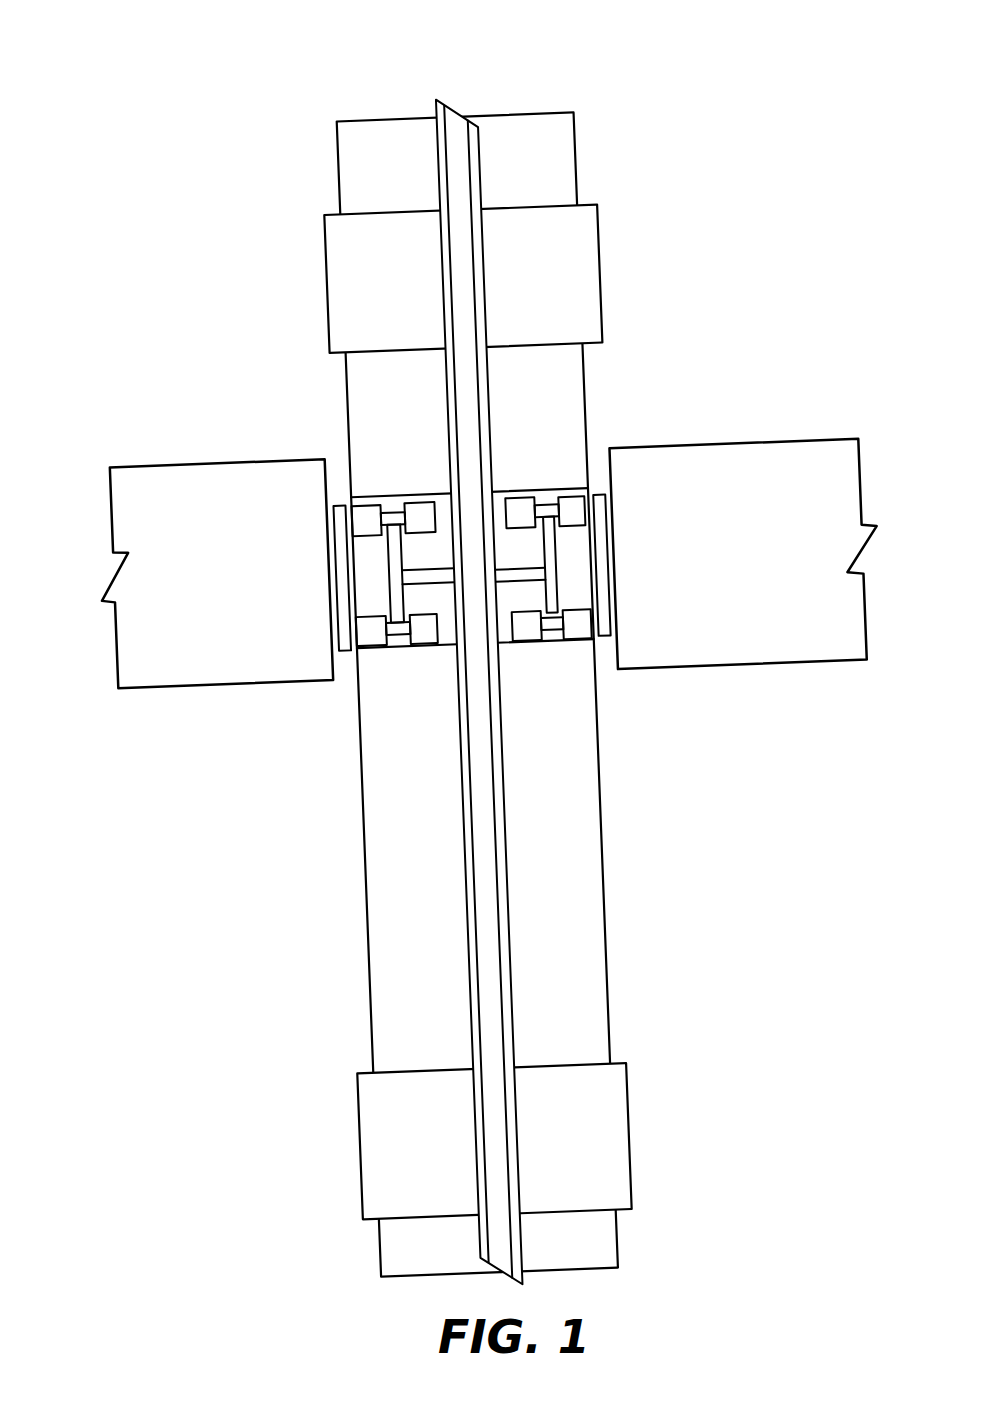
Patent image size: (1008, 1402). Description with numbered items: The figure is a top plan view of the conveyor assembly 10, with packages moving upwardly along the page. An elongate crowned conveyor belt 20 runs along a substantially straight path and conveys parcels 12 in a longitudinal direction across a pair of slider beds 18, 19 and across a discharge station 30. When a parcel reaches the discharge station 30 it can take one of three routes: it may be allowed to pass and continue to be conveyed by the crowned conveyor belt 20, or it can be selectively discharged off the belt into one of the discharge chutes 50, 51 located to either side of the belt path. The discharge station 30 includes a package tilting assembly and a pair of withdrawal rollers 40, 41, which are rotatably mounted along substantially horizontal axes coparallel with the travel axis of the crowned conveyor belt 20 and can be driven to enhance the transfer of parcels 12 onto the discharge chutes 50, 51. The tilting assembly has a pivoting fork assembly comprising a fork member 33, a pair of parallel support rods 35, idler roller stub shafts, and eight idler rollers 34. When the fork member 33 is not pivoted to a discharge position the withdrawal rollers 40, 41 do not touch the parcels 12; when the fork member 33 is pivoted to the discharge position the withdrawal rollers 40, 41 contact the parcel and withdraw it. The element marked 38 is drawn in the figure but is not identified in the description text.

The conveyor assembly 10 is at (471, 643).
The parcels 12 is at (340, 287).
The slider bed 18 is at (398, 966).
The slider bed 19 is at (543, 420).
The crowned conveyor belt 20 is at (468, 369).
The discharge station 30 is at (258, 577).
The fork member 33 is at (437, 583).
The idler rollers 34 is at (417, 508).
The support rods 35 is at (548, 573).
The connector block 38 is at (552, 625).
The withdrawal roller 40 is at (328, 522).
The withdrawal roller 41 is at (602, 633).
The discharge chute 50 is at (243, 487).
The discharge chute 51 is at (723, 475).